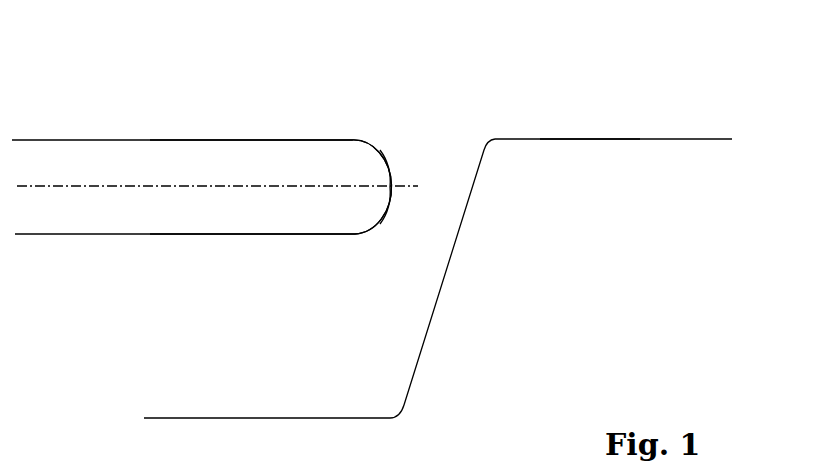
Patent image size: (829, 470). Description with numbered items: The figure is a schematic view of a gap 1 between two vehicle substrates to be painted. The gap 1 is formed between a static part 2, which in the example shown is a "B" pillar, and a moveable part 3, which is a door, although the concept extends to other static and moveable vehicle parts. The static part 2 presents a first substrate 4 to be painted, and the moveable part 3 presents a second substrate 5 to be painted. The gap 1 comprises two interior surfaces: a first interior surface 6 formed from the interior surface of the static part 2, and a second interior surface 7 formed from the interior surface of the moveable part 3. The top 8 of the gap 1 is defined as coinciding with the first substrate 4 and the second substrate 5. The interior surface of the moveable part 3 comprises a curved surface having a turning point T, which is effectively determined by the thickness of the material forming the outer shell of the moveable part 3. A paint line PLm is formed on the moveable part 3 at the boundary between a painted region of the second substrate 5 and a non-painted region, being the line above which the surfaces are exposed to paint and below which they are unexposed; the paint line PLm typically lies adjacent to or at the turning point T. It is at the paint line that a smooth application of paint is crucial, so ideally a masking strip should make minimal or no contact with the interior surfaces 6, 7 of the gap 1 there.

The gap 1 is at (387, 118).
The static part 2 is at (708, 130).
The moveable part 3 is at (178, 123).
The first substrate 4 is at (577, 139).
The second substrate 5 is at (248, 140).
The first interior surface 6 is at (430, 312).
The second interior surface 7 is at (307, 235).
The top of the gap 8 is at (487, 141).
The turning point T is at (390, 182).
The paint line PLm is at (392, 190).